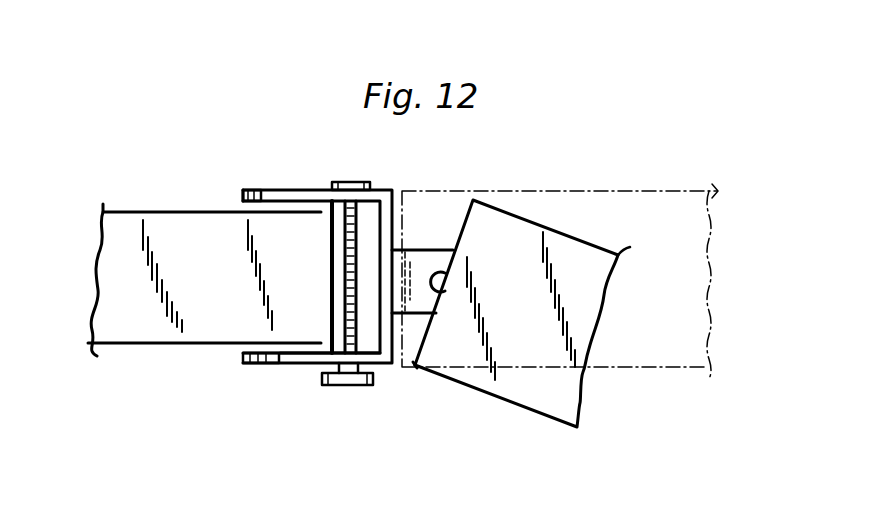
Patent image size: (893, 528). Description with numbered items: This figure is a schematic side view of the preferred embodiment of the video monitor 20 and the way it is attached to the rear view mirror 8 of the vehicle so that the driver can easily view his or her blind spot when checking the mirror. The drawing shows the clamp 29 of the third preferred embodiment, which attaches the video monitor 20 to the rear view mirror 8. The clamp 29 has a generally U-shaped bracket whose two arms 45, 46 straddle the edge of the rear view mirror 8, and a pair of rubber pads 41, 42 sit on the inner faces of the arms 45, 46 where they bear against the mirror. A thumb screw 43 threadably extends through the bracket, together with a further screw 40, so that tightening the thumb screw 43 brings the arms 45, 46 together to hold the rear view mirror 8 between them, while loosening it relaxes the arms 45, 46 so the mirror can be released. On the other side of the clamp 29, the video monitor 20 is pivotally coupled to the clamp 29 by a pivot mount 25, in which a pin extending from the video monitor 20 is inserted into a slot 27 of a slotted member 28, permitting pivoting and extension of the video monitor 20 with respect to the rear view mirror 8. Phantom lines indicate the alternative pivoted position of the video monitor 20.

The first panel 8 is at (165, 318).
The second panel 20 is at (555, 232).
The hinge 25 is at (418, 252).
The hinge pin loop 27 is at (438, 270).
The panel edge 28 is at (414, 366).
The clamp bracket 29 is at (283, 182).
The upper bolt 40 is at (319, 200).
The upper nut 41 is at (243, 208).
The lower nut 42 is at (250, 346).
The lower bolt 43 is at (353, 386).
The upper flange 45 is at (253, 192).
The lower flange 46 is at (281, 363).